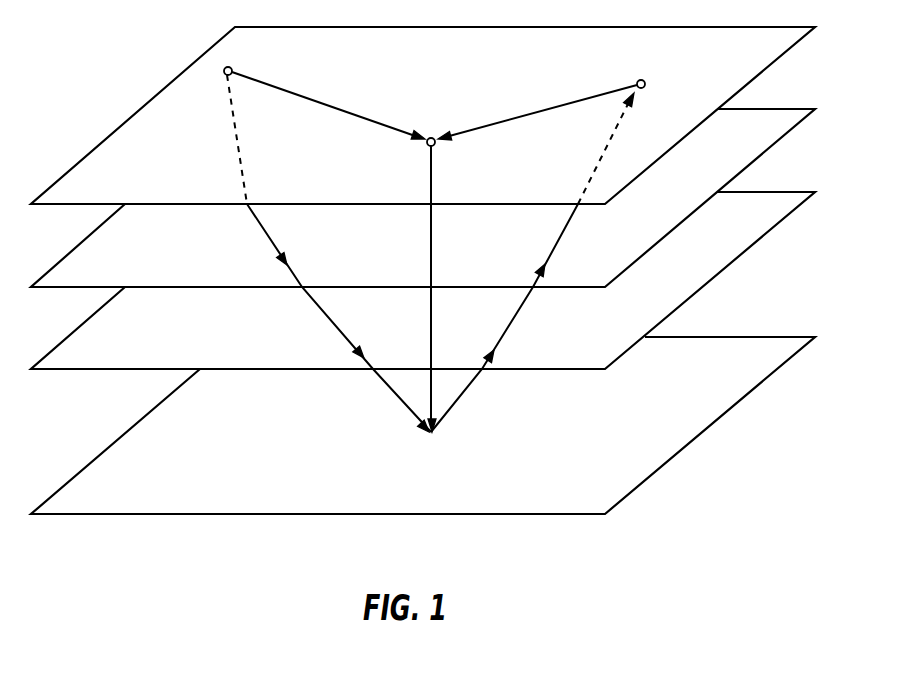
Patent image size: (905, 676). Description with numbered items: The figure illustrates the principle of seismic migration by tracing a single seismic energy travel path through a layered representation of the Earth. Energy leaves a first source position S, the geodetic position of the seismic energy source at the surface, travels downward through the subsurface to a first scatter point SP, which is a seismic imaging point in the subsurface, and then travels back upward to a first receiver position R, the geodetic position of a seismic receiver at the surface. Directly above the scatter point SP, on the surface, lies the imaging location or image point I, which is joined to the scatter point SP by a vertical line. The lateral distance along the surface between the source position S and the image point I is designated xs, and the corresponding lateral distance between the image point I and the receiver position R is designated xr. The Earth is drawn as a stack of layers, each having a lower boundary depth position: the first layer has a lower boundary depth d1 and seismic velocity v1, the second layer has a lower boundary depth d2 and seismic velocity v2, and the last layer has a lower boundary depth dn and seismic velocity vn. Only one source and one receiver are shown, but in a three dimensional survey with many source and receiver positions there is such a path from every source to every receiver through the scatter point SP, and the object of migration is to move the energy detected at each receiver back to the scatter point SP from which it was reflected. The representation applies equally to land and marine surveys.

The first source position S is at (241, 54).
The first receiver position R is at (659, 84).
The image point I is at (434, 263).
The first scatter point SP is at (430, 280).
The source-to-image-point lateral distance xs is at (328, 107).
The image-point-to-receiver lateral distance xr is at (537, 99).
The lower boundary depth position of the first layer d1 is at (423, 198).
The seismic velocity of the first layer v1 is at (423, 198).
The lower boundary depth position of the second layer d2 is at (423, 280).
The seismic velocity of the second layer v2 is at (423, 280).
The lower boundary depth position of the nth layer dn is at (423, 425).
The seismic velocity of the nth layer vn is at (423, 425).